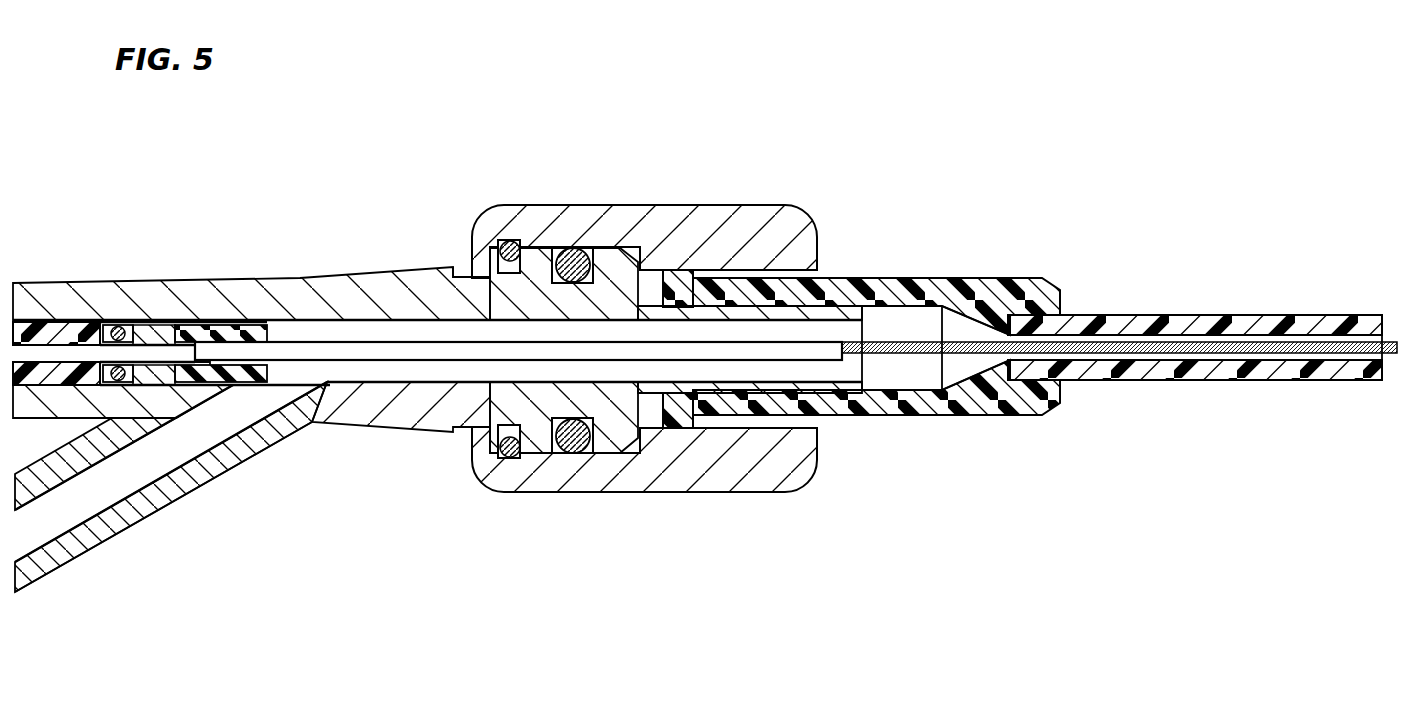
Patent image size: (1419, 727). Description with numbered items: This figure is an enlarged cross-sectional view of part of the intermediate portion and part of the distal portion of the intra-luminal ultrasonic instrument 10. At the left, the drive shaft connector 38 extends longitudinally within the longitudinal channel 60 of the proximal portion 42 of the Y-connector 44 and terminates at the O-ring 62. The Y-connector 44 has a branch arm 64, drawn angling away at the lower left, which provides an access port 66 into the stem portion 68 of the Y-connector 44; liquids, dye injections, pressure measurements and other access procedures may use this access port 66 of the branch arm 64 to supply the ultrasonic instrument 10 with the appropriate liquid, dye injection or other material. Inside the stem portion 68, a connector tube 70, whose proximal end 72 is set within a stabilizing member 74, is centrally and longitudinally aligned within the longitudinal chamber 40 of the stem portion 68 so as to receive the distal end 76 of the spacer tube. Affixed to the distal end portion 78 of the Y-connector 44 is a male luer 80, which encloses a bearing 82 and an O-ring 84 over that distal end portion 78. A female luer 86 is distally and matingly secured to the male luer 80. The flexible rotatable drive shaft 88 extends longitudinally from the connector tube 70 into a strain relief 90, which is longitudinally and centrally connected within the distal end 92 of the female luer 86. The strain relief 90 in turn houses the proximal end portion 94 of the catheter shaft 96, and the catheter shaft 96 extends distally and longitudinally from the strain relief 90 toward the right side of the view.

The ultrasonic instrument 10 is at (822, 173).
The drive shaft connector 38 is at (55, 330).
The longitudinal chamber 40 is at (190, 320).
The proximal portion 42 is at (72, 575).
The Y-connector 44 is at (333, 407).
The longitudinal channel 60 is at (258, 327).
The O-ring 62 is at (115, 325).
The branch arm 64 is at (148, 497).
The access port 66 is at (212, 428).
The stem portion 68 is at (387, 330).
The connector tube 70 is at (432, 350).
The proximal end 72 is at (227, 352).
The stabilizing member 74 is at (148, 335).
The distal end 76 is at (175, 388).
The distal end portion 78 is at (613, 412).
The male luer 80 is at (785, 462).
The bearing 82 is at (510, 463).
The O-ring 84 is at (582, 455).
The female luer 86 is at (958, 412).
The flexible rotatable drive shaft 88 is at (885, 330).
The strain relief 90 is at (1158, 372).
The distal end 92 is at (1013, 411).
The proximal end portion 94 is at (1125, 325).
The catheter shaft 96 is at (1318, 338).